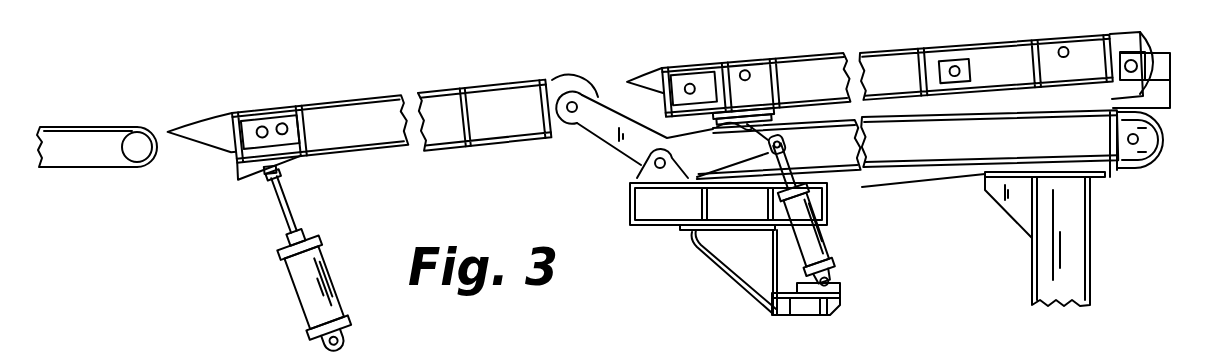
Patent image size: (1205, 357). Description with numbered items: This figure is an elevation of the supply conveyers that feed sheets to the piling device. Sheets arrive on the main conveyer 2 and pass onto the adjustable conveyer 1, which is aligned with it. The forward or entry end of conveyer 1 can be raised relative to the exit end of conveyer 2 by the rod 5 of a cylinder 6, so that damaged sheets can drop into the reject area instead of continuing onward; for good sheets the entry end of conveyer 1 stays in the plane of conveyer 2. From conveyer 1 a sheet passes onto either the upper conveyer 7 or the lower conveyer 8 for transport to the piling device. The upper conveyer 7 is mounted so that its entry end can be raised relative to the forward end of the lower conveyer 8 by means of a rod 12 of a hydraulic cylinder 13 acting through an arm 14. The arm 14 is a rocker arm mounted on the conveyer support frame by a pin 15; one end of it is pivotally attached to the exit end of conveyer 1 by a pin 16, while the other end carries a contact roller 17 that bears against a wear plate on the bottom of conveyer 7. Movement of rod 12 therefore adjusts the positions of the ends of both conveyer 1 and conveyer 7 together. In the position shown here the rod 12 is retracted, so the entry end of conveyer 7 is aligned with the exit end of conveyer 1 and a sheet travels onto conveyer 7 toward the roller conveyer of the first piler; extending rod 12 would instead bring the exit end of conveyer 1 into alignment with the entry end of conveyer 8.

The adjustable conveyer 1 is at (375, 93).
The main conveyer 2 is at (98, 127).
The rod 5 is at (287, 197).
The cylinder 6 is at (290, 288).
The upper conveyer 7 is at (823, 53).
The lower conveyer 8 is at (1070, 158).
The rod 12 is at (790, 166).
The hydraulic cylinder 13 is at (828, 242).
The arm 14 is at (593, 145).
The pin 15 is at (638, 172).
The pin 16 is at (577, 101).
The contact roller 17 is at (717, 127).